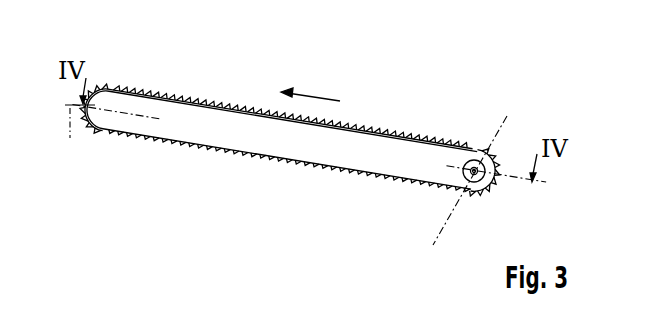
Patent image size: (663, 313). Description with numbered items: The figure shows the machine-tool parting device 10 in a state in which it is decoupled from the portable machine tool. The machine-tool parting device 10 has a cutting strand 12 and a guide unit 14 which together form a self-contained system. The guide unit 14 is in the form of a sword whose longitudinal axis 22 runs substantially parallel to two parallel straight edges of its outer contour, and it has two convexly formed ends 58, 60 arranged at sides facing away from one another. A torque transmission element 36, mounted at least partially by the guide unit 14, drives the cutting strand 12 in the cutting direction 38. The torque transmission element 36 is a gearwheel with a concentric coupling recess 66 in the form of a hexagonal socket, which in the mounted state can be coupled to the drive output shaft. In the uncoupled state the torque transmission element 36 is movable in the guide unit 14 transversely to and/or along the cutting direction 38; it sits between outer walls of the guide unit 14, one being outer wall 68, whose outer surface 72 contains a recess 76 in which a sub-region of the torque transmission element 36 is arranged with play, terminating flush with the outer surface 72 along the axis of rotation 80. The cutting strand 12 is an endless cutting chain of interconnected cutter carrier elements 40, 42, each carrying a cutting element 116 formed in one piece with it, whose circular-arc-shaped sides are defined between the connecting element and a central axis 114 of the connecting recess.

The machine-tool parting device 10 is at (457, 73).
The cutting strand 12 is at (147, 96).
The guide unit 14 is at (177, 133).
The longitudinal axis of the guide unit 22 is at (74, 132).
The torque transmission element 36 is at (475, 184).
The cutting direction 38 is at (319, 96).
The cutter carrier element 40 is at (177, 96).
The cutter carrier element 42 is at (184, 98).
The convexly formed end 58 is at (91, 130).
The convexly formed end 60 is at (501, 194).
The coupling recess 66 is at (477, 151).
The outer wall 68 is at (400, 168).
The outer surface 72 is at (347, 162).
The recess 76 is at (464, 184).
The axis of rotation 80 is at (505, 117).
The central axis of the connecting recess 114 is at (182, 97).
The cutting element 116 is at (187, 99).